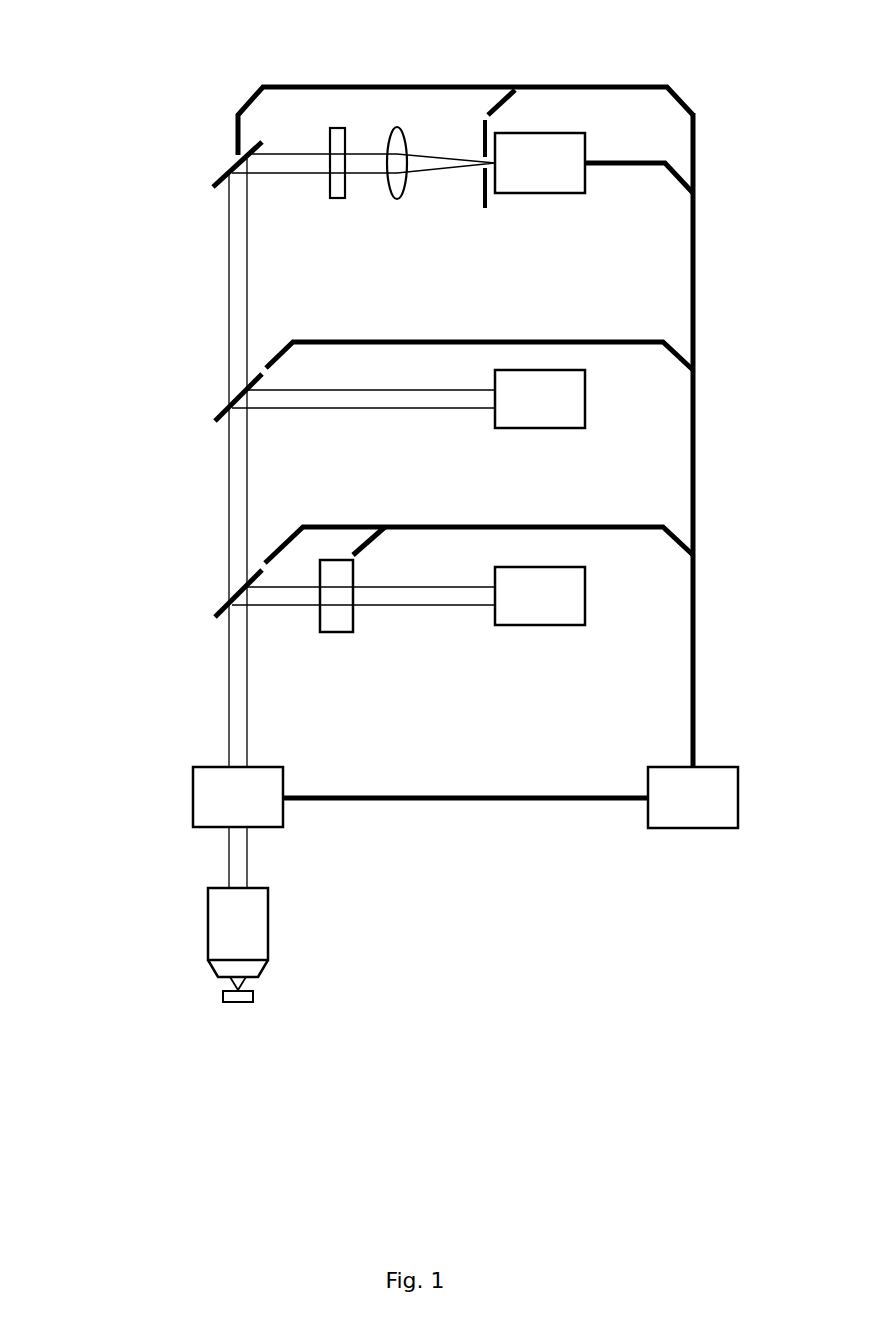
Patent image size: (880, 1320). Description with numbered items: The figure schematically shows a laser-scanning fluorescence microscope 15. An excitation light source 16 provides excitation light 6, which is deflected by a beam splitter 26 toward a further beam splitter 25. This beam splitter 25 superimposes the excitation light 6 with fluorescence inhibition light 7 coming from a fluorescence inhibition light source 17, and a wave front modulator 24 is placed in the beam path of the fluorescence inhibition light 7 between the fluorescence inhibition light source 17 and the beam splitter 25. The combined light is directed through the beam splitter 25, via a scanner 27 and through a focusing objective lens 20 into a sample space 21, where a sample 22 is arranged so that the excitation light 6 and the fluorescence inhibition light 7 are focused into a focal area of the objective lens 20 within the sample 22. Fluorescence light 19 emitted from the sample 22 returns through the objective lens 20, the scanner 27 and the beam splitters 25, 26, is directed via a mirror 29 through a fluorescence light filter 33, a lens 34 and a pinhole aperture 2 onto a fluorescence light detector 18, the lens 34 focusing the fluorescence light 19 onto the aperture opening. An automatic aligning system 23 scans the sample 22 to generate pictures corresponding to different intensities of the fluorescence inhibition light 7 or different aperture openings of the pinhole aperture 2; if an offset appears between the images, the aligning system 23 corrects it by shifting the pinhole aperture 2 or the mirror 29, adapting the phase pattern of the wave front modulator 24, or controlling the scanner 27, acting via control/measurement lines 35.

The laser-scanning fluorescence microscope 15 is at (707, 102).
The control/measurement lines 35 is at (702, 465).
The fluorescence light 19 is at (222, 327).
The mirror 29 is at (220, 172).
The fluorescence light filter 33 is at (328, 202).
The lens 34 is at (392, 200).
The pinhole aperture 2 is at (480, 188).
The fluorescence light detector 18 is at (587, 195).
The beam splitter 26 is at (215, 422).
The excitation light 6 is at (422, 415).
The excitation light source 16 is at (587, 430).
The beam splitter 25 is at (215, 617).
The fluorescence inhibition light 7 is at (422, 613).
The wave front modulator 24 is at (336, 638).
The fluorescence inhibition light source 17 is at (590, 628).
The scanner 27 is at (187, 763).
The automatic aligning system 23 is at (740, 830).
The focusing objective lens 20 is at (202, 887).
The sample space 21 is at (217, 986).
The sample 22 is at (220, 1008).